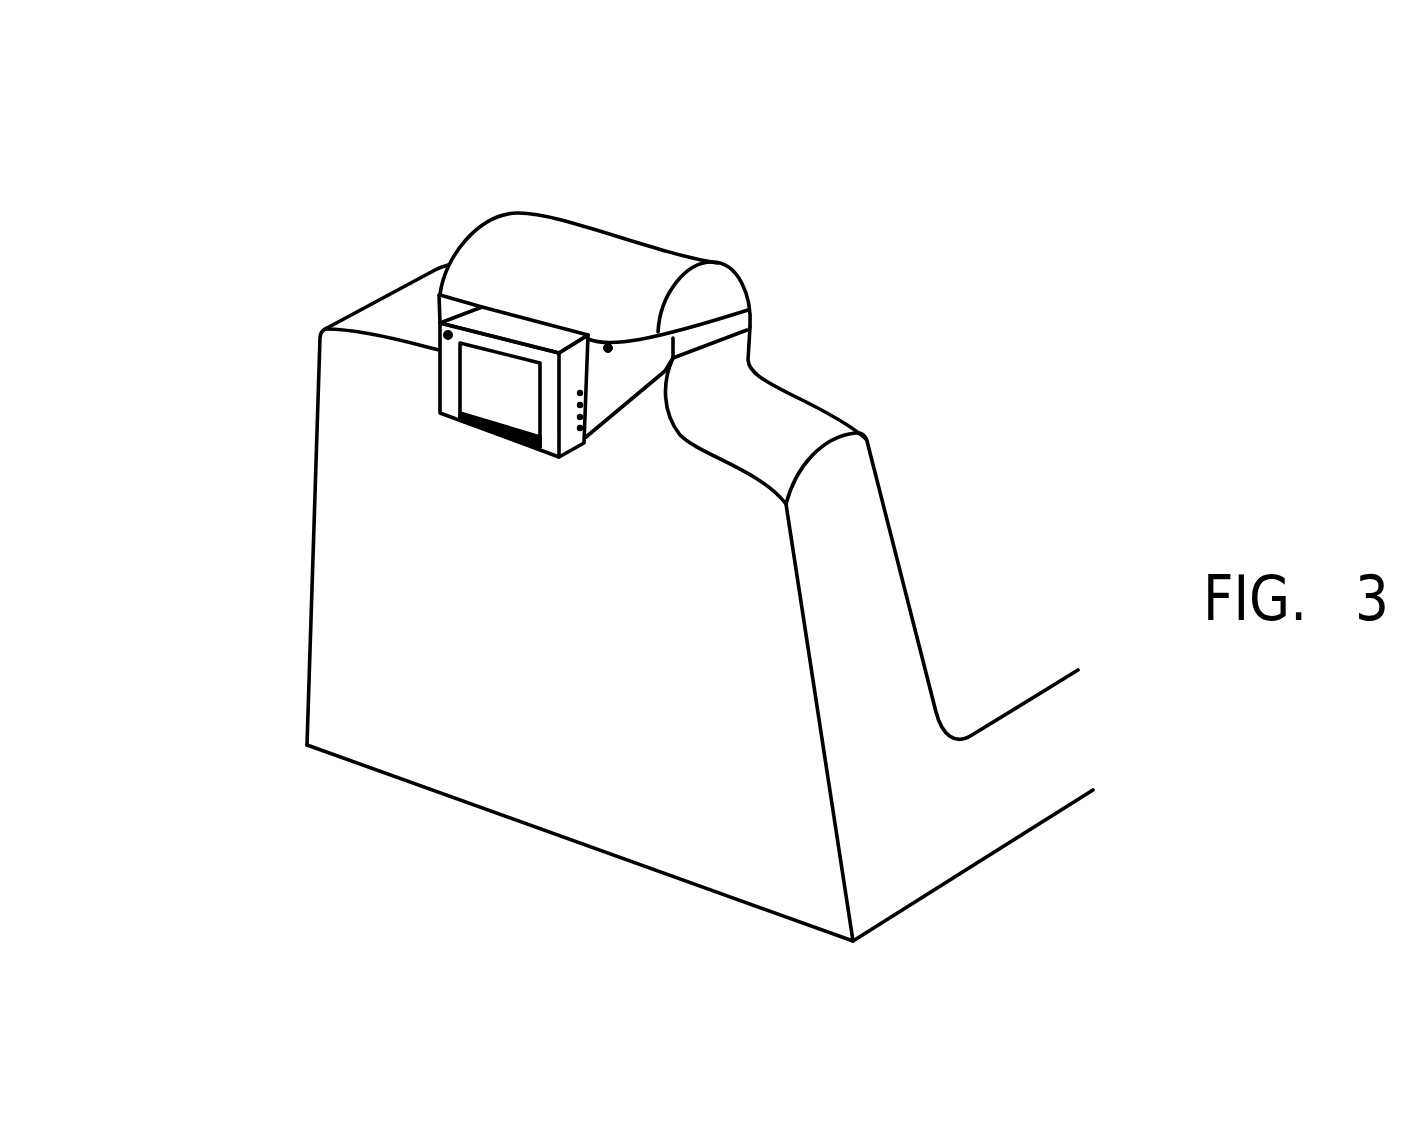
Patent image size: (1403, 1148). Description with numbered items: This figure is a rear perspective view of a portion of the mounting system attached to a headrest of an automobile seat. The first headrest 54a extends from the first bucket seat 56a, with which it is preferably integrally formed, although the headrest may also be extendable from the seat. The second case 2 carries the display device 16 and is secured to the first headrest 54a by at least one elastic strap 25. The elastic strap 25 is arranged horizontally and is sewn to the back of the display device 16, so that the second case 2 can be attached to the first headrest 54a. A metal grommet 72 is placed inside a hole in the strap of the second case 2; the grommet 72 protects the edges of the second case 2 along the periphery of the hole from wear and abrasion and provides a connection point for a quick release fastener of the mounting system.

The second case 2 is at (406, 290).
The display device 16 is at (492, 387).
The elastic strap 25 is at (748, 310).
The first headrest 54a is at (583, 227).
The first bucket seat 56a is at (721, 603).
The metal grommet 72 is at (613, 340).